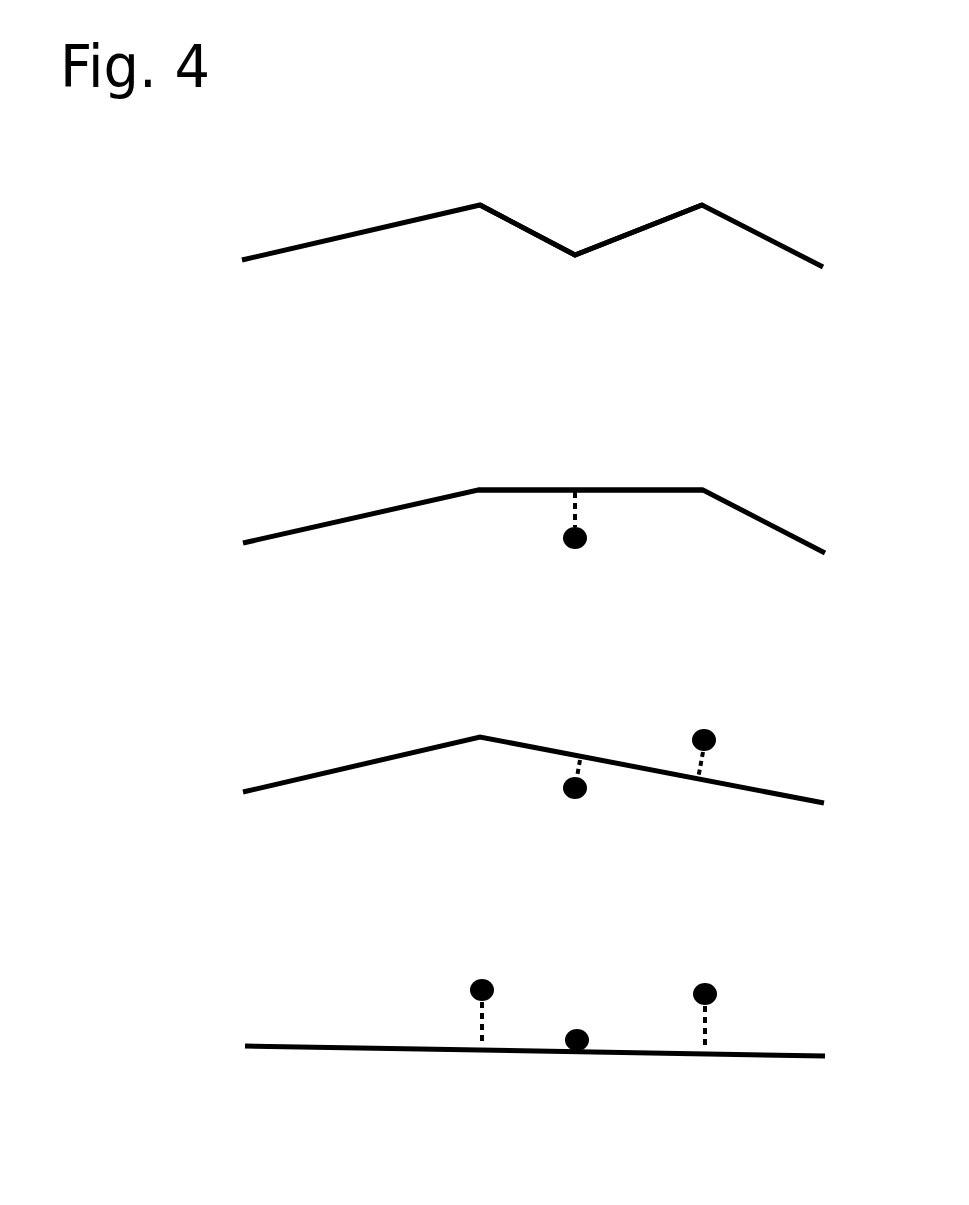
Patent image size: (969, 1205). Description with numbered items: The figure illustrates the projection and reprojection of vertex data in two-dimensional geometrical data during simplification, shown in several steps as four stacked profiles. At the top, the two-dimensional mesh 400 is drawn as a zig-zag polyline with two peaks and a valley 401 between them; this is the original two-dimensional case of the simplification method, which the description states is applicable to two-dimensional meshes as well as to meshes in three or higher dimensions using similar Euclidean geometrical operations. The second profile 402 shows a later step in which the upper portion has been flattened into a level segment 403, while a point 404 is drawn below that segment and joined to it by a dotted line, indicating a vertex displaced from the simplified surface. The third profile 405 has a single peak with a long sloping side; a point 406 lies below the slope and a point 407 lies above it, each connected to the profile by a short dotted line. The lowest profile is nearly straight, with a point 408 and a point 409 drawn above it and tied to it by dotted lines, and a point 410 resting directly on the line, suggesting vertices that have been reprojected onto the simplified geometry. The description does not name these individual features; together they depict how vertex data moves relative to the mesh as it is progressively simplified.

The two-dimensional mesh 400 is at (720, 153).
The valley between peaks 401 is at (527, 222).
The surface profile with flat top 402 is at (703, 457).
The flat top portion 403 is at (554, 485).
The point below flat portion 404 is at (567, 510).
The surface profile with single peak 405 is at (757, 785).
The point below sloped portion 406 is at (565, 770).
The point above sloped portion 407 is at (692, 760).
The point above flat surface 408 is at (475, 1025).
The point above flat surface 409 is at (712, 1032).
The point on flat surface 410 is at (590, 1055).